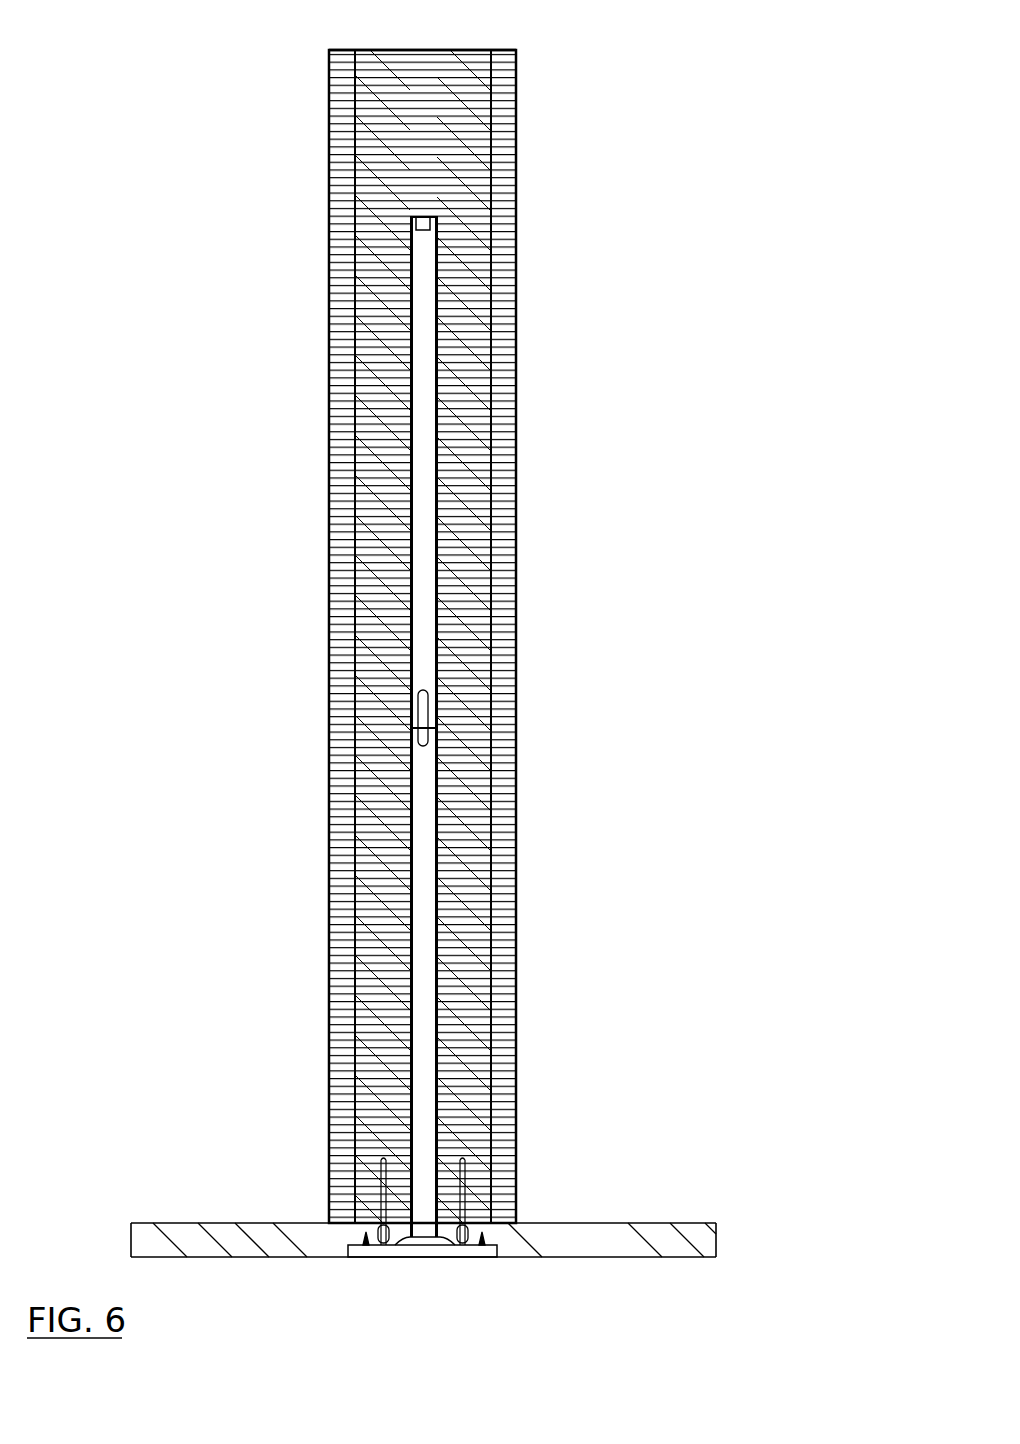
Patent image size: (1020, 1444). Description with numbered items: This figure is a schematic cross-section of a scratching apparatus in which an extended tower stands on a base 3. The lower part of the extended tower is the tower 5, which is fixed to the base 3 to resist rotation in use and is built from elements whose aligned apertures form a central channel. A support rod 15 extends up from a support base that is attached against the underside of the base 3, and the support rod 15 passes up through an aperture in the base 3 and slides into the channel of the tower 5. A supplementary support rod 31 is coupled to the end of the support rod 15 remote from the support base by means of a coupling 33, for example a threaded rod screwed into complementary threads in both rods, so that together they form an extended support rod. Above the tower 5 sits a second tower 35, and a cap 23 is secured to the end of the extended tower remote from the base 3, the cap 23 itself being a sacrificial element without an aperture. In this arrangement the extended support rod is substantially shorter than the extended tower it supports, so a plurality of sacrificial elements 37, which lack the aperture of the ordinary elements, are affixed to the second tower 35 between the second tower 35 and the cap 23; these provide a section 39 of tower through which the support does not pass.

The base 3 is at (603, 1245).
The tower 5 is at (423, 633).
The support rod 15 is at (423, 972).
The cap 23 is at (465, 50).
The supplementary support rod 31 is at (420, 573).
The coupling 33 is at (402, 728).
The second tower 35 is at (503, 451).
The sacrificial elements 37 is at (500, 176).
The section of tower 39 is at (302, 53).